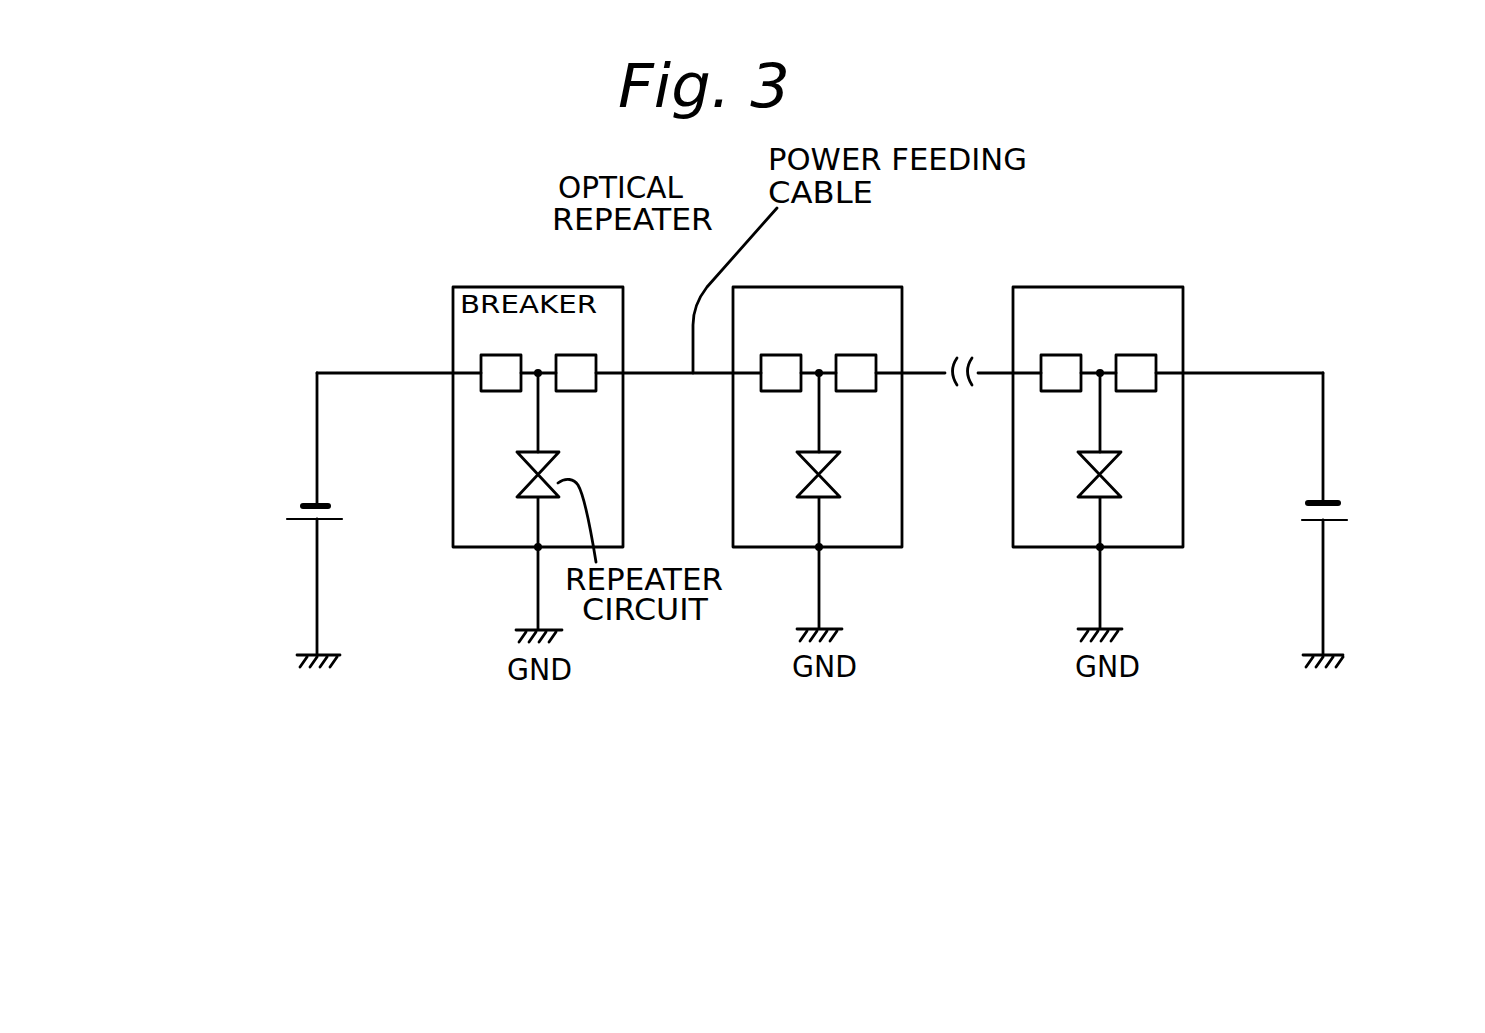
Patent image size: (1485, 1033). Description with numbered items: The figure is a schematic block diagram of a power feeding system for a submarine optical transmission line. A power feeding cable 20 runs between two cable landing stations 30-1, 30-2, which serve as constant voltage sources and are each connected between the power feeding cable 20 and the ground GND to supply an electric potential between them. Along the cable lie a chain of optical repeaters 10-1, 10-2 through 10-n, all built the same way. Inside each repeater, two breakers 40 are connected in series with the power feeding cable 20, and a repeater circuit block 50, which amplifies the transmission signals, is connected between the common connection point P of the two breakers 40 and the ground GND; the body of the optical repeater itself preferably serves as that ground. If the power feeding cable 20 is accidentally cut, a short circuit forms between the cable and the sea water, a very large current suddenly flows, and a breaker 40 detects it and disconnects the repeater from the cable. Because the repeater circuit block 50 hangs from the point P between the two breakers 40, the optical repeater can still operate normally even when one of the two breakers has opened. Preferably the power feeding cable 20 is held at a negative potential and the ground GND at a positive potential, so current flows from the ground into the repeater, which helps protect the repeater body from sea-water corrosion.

The optical repeater 10-1 is at (583, 287).
The optical repeater 10-2 is at (857, 287).
The optical repeater 10-n is at (1142, 287).
The power feeding cable 20 is at (667, 377).
The cable landing station 30-1 is at (300, 496).
The cable landing station 30-2 is at (1332, 497).
The breaker 40 is at (1133, 355).
The repeater circuit block 50 is at (1137, 468).
The common connection point P is at (1087, 400).